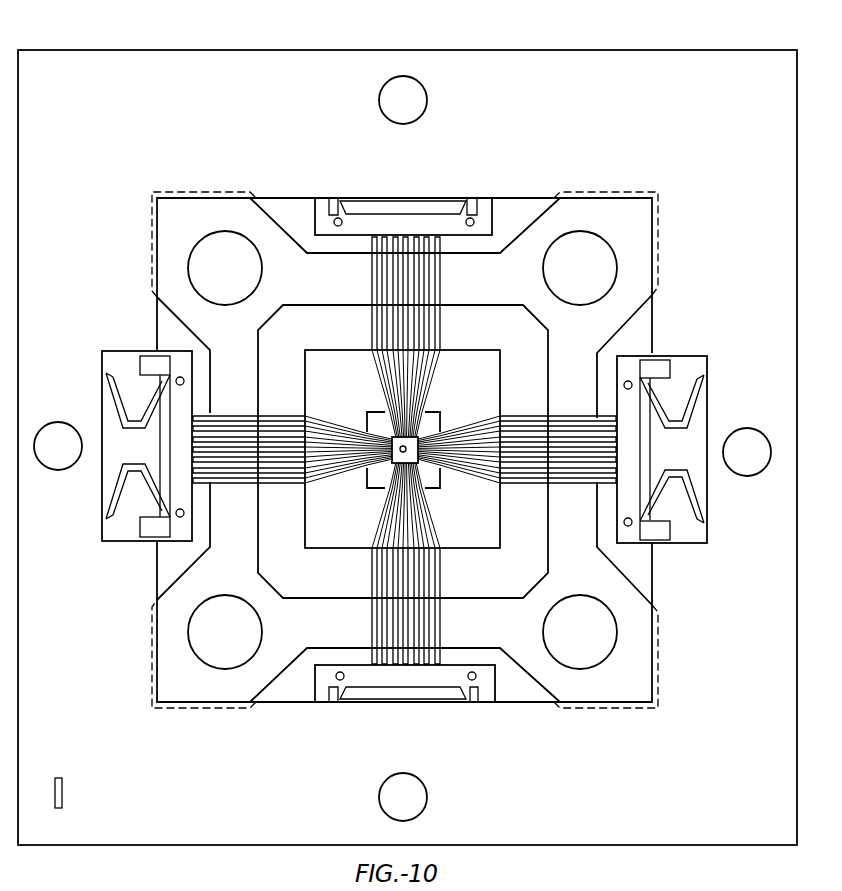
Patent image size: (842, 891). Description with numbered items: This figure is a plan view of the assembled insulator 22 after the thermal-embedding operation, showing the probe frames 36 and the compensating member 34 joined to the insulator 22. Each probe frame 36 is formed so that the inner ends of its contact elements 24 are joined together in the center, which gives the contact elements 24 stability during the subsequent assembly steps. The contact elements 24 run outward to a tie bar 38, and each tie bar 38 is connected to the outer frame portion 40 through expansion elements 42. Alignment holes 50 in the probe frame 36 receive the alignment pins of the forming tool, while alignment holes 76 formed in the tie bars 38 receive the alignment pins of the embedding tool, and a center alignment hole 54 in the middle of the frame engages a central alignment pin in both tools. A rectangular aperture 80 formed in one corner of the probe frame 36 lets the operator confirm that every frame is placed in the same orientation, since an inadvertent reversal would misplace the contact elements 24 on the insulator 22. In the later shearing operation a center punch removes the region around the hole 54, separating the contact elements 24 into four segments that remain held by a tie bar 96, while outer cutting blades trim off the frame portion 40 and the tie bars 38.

The probe frame 36 is at (178, 38).
The alignment holes 50 is at (380, 100).
The rectangular aperture 80 is at (61, 792).
The insulator 22 is at (196, 568).
The frame portion 40 is at (590, 198).
The tie bar 38 is at (315, 212).
The expansion elements 42 is at (340, 202).
The alignment holes 76 is at (474, 227).
The compensating member 34 is at (322, 305).
The contact elements 24 is at (584, 440).
The tie bar 96 is at (390, 440).
The alignment hole 54 is at (382, 468).